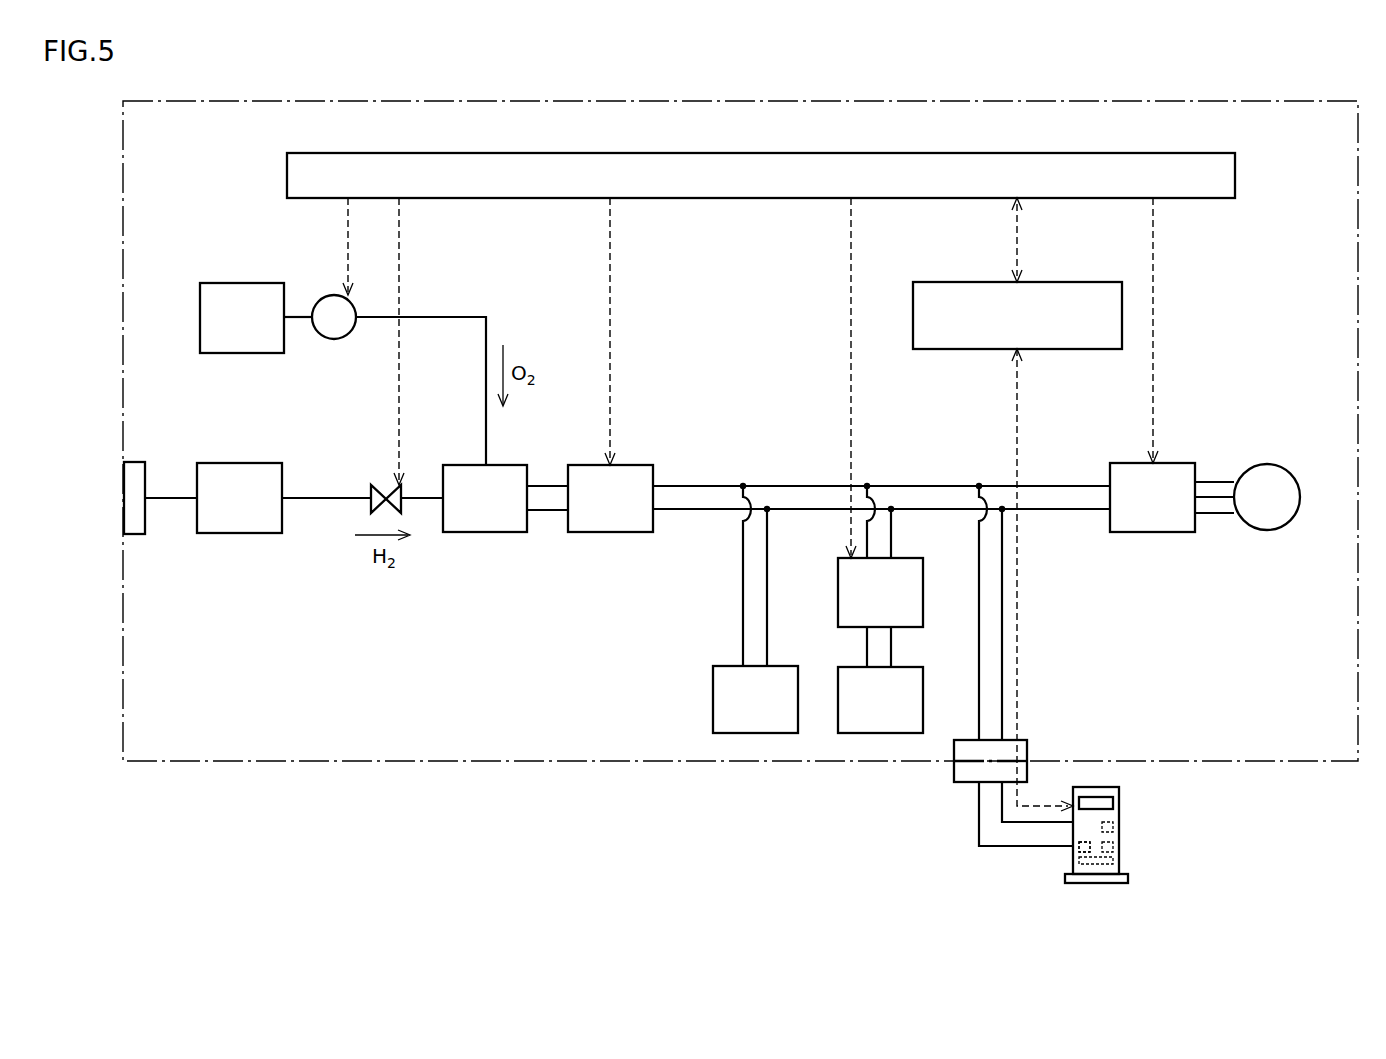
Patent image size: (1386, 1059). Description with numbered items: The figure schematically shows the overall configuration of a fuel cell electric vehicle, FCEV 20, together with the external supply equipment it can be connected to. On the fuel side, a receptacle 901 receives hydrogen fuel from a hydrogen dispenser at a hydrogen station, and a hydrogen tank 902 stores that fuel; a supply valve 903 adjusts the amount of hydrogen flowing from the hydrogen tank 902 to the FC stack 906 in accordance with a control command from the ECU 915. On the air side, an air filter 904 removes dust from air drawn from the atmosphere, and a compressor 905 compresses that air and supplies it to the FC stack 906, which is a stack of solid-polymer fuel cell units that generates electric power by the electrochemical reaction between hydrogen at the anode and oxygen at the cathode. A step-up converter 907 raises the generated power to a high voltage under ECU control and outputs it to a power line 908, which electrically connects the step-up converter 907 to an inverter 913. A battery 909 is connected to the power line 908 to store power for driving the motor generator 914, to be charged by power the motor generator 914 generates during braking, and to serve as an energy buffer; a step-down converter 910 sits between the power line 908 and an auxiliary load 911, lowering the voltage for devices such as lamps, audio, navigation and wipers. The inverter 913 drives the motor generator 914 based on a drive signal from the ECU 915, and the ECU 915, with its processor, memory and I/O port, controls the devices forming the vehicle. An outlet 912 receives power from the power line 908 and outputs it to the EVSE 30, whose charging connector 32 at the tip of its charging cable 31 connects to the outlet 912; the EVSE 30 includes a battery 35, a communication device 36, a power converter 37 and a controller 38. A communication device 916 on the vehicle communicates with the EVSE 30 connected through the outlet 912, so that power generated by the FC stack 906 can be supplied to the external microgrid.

The FCEV 20 is at (1313, 100).
The EVSE 30 is at (1110, 787).
The charging cable 31 is at (1013, 813).
The charging connector 32 is at (953, 770).
The battery 35 is at (1113, 861).
The communication device 36 is at (1113, 847).
The power converter 37 is at (1113, 827).
The controller 38 is at (1079, 850).
The receptacle 901 is at (136, 462).
The hydrogen tank 902 is at (249, 463).
The supply valve 903 is at (386, 484).
The air filter 904 is at (252, 284).
The compressor 905 is at (331, 294).
The FC stack 906 is at (506, 465).
The step-up converter 907 is at (632, 465).
The power line 908 is at (709, 522).
The battery 909 is at (779, 666).
The step-down converter 910 is at (907, 558).
The auxiliary load 911 is at (907, 667).
The outlet 912 is at (1016, 740).
The inverter 913 is at (1170, 463).
The motor generator 914 is at (1292, 475).
The ECU 915 is at (983, 153).
The communication device 916 is at (1061, 282).